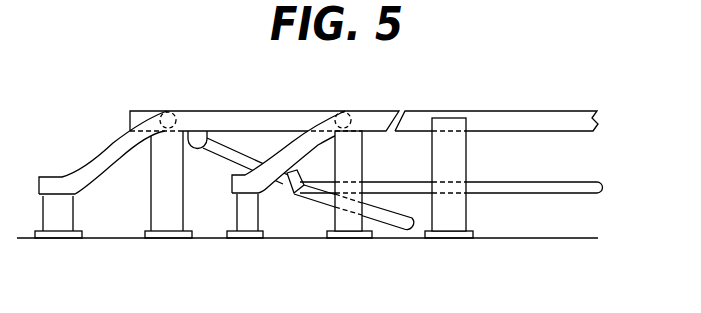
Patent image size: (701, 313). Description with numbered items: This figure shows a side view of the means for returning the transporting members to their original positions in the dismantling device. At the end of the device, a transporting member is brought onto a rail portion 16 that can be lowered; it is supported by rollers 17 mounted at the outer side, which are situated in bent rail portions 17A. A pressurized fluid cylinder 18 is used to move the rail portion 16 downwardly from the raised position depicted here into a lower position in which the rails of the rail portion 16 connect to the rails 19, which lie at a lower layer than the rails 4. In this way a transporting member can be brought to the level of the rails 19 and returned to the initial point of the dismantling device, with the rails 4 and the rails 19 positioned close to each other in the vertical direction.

The rails 4 is at (488, 111).
The rail portion 16 is at (270, 111).
The rollers 17 is at (170, 113).
The bent rail portions 17A is at (102, 158).
The pressurized fluid cylinder 18 is at (382, 226).
The rails 19 is at (528, 184).